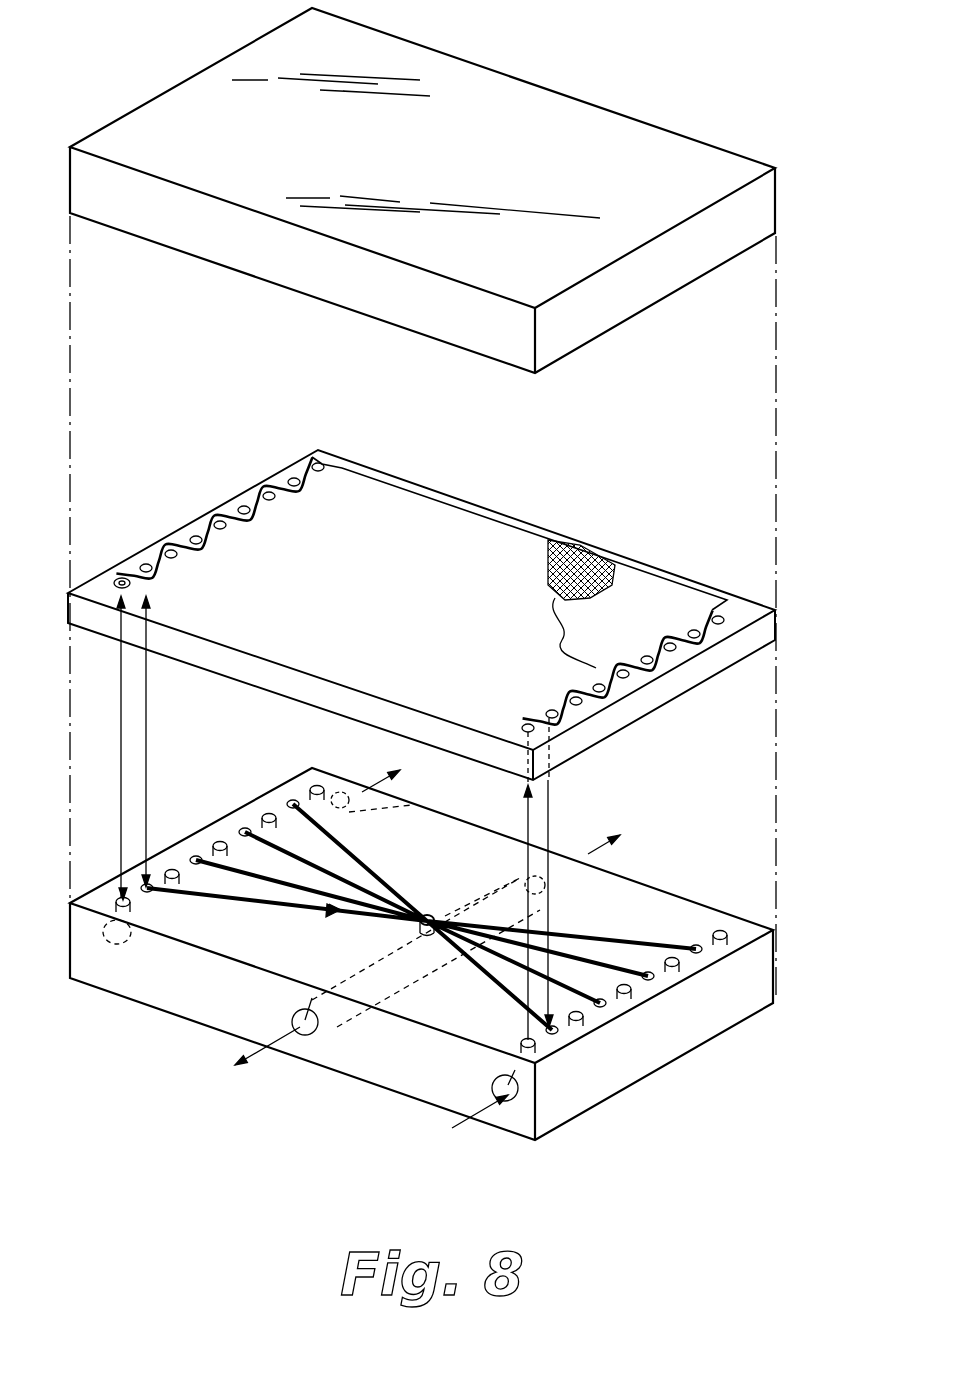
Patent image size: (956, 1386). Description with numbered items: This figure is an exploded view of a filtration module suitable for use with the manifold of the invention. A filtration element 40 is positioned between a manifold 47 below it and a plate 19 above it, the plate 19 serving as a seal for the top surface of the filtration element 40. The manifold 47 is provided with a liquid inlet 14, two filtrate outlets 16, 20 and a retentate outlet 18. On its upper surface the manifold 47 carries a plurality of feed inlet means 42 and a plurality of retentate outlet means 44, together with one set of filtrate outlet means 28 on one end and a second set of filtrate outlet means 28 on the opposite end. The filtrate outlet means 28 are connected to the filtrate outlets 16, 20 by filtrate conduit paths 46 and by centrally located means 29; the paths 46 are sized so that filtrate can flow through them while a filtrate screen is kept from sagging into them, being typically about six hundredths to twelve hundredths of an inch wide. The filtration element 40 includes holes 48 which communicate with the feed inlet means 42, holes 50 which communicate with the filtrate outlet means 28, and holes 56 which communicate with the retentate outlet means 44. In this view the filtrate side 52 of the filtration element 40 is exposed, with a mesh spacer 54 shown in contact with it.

The liquid inlet 14 is at (505, 1102).
The filtrate outlet 16 is at (306, 1036).
The retentate outlet 18 is at (414, 805).
The plate 19 is at (648, 122).
The filtrate outlet 20 is at (524, 866).
The filtrate outlet means 28 is at (246, 828).
The centrally located means 29 is at (428, 914).
The filtration element 40 is at (778, 624).
The feed inlet means 42 is at (719, 931).
The retentate outlet means 44 is at (122, 898).
The filtrate conduit paths 46 is at (335, 890).
The manifold 47 is at (160, 1012).
The holes 48 is at (719, 624).
The holes 50 is at (192, 548).
The filtrate side 52 is at (471, 607).
The mesh spacer 54 is at (572, 560).
The holes 56 is at (120, 578).